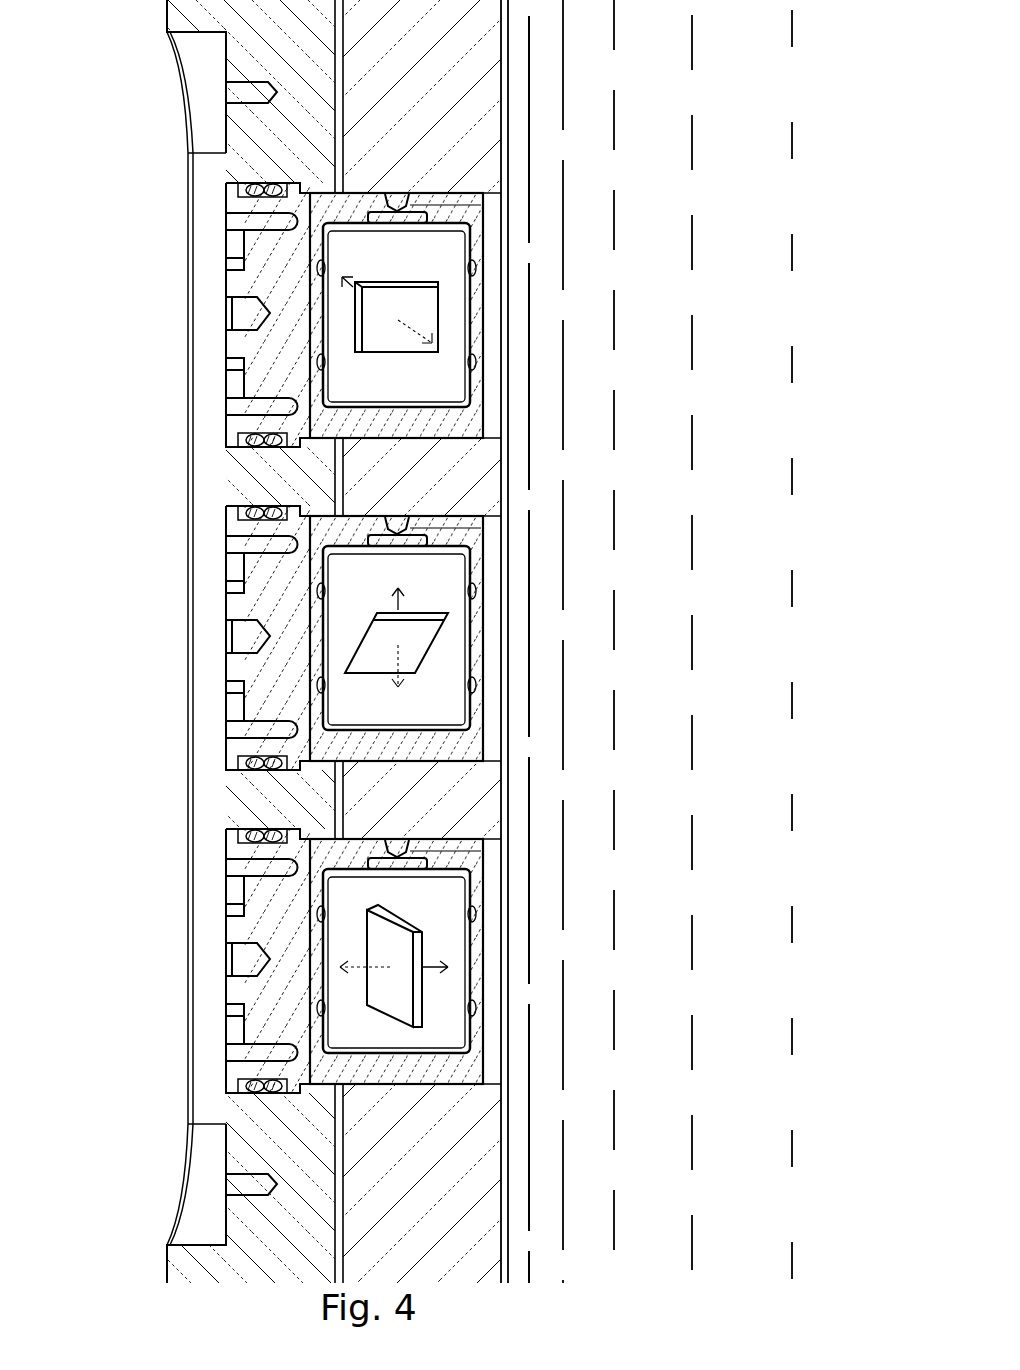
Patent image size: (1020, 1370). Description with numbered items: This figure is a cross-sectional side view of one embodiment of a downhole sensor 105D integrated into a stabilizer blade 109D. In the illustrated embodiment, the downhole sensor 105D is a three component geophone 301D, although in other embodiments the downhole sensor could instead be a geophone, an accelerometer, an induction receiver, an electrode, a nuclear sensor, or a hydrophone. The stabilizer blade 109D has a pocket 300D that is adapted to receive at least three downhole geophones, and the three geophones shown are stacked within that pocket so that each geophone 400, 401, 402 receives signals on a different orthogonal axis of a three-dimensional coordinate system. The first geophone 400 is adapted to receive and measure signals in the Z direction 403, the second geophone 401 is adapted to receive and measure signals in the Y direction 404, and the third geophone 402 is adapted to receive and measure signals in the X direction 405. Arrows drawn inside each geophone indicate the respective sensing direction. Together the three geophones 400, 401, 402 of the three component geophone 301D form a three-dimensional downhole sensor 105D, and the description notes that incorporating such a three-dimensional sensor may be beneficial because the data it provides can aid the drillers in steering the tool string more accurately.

The downhole sensor 105D is at (130, 1052).
The stabilizer blade 109D is at (187, 270).
The pocket 300D is at (490, 1050).
The three component geophone 301D is at (493, 197).
The first geophone 400 is at (433, 898).
The second geophone 401 is at (430, 577).
The third geophone 402 is at (415, 255).
The Z direction 403 is at (375, 1030).
The Y direction 404 is at (367, 693).
The X direction 405 is at (375, 370).